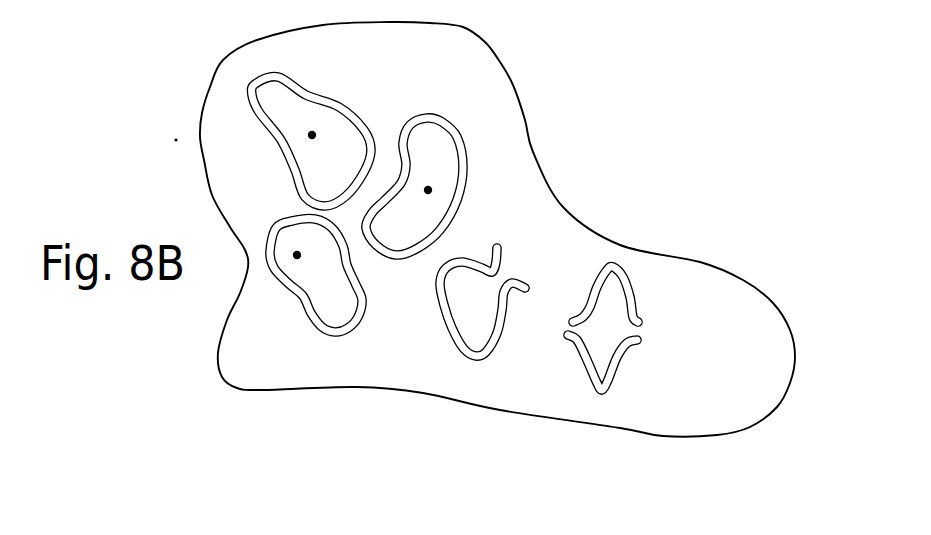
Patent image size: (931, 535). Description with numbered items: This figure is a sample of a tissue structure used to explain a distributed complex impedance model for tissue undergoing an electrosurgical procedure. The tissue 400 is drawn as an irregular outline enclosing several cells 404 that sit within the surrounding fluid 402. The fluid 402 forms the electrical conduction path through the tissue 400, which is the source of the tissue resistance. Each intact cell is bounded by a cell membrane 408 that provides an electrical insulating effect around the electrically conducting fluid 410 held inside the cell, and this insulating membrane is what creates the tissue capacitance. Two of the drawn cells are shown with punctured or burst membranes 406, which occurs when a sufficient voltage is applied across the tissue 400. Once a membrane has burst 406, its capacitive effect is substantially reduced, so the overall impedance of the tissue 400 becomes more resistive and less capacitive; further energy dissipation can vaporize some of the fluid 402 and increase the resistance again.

The tissue 400 is at (732, 255).
The fluid 402 is at (533, 220).
The cells 404 is at (412, 115).
The burst cell membranes 406 is at (473, 360).
The cell membranes 408 is at (442, 115).
The electrically conducting fluid within the cells 410 is at (442, 147).